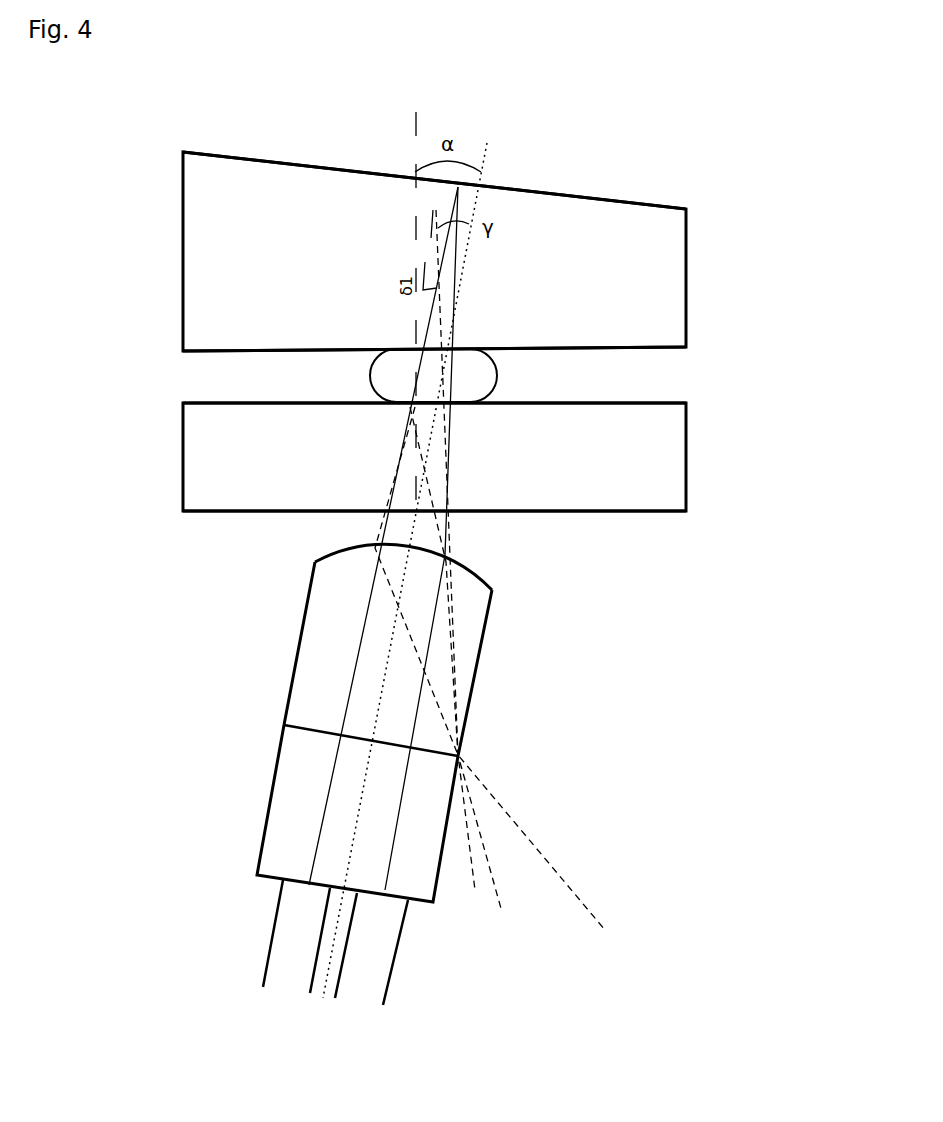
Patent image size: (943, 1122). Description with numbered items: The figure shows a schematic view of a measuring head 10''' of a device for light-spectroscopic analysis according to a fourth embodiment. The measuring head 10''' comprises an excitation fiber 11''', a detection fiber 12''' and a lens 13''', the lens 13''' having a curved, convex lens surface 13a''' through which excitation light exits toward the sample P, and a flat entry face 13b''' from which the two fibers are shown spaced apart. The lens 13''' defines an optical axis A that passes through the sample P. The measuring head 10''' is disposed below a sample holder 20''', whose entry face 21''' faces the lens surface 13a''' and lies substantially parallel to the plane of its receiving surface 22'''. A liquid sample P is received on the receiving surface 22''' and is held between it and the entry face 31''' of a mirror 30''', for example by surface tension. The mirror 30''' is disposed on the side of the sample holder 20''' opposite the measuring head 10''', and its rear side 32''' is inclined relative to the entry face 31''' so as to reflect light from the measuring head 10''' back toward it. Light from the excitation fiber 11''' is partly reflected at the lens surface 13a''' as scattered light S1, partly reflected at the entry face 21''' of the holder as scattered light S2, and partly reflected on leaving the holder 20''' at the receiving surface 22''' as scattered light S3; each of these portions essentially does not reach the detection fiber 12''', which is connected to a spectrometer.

The measuring head 10''' is at (440, 795).
The excitation fiber 11''' is at (233, 957).
The detection fiber 12''' is at (429, 973).
The lens 13''' is at (323, 659).
The lens surface 13a''' is at (491, 567).
The flat entry face 13b''' is at (286, 787).
The sample holder 20''' is at (486, 457).
The entry face 21''' is at (434, 554).
The receiving surface 22''' is at (379, 365).
The mirror 30''' is at (501, 251).
The entry face of the mirror 31''' is at (487, 374).
The rear side of the mirror 32''' is at (494, 162).
The sample P is at (412, 373).
The optical axis A is at (483, 160).
The scattered light S1 is at (585, 907).
The scattered light S2 is at (488, 882).
The scattered light S3 is at (473, 887).